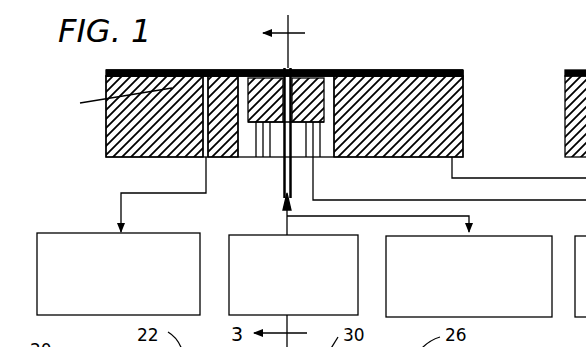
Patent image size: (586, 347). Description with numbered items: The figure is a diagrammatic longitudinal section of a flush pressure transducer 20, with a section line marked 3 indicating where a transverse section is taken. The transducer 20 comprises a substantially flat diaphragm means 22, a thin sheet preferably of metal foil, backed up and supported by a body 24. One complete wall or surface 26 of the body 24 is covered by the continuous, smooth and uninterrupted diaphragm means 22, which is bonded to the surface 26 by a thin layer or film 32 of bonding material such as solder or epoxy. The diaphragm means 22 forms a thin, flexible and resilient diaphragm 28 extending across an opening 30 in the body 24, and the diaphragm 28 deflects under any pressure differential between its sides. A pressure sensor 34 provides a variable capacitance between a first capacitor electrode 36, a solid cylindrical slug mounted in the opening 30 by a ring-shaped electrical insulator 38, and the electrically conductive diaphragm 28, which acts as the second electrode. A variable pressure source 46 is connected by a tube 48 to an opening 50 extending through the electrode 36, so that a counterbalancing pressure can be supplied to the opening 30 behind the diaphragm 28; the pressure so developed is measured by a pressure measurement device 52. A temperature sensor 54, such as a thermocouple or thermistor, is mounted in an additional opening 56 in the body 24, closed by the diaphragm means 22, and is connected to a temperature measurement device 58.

The flush pressure transducer 20 is at (88, 69).
The diaphragm means 22 is at (385, 71).
The body 24 is at (463, 108).
The wall or surface 26 is at (438, 71).
The diaphragm 28 is at (268, 73).
The opening 30 is at (382, 158).
The layer or film of bonding material 32 is at (463, 77).
The pressure sensor 34 is at (238, 158).
The first capacitor electrode 36 is at (263, 157).
The ring-shaped electrical insulator 38 is at (320, 160).
The section line 3- 3 is at (272, 41).
The variable pressure source 46 is at (229, 240).
The tube 48 is at (284, 200).
The opening through the electrode 50 is at (291, 72).
The pressure measurement device 52 is at (481, 236).
The temperature sensor 54 is at (110, 100).
The temperature sensor opening 56 is at (203, 160).
The temperature measurement device 58 is at (80, 233).